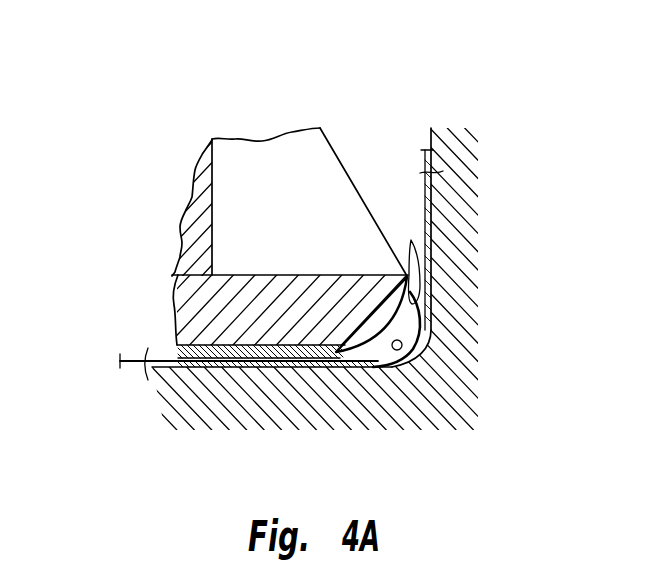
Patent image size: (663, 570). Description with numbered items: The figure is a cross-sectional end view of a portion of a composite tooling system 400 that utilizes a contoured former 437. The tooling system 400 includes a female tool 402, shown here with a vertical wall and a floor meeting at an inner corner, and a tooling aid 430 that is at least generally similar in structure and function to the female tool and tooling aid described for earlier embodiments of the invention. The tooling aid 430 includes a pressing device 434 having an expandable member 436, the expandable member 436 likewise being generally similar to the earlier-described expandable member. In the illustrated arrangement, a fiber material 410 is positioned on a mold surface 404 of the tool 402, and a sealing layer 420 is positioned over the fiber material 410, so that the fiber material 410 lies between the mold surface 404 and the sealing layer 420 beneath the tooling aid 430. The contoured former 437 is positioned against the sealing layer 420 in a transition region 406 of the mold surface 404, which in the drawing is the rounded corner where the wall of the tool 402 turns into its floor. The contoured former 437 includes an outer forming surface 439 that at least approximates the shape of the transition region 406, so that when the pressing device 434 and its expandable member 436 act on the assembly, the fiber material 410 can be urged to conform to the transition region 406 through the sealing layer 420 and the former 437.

The tooling system 400 is at (170, 68).
The female tool 402 is at (462, 167).
The mold surface 404 is at (432, 130).
The transition region 406 is at (390, 366).
The fiber material 410 is at (150, 366).
The sealing layer 420 is at (128, 358).
The tooling aid 430 is at (176, 302).
The pressing device 434 is at (410, 303).
The expandable member 436 is at (411, 240).
The contoured former 437 is at (341, 360).
The outer forming surface 439 is at (426, 344).